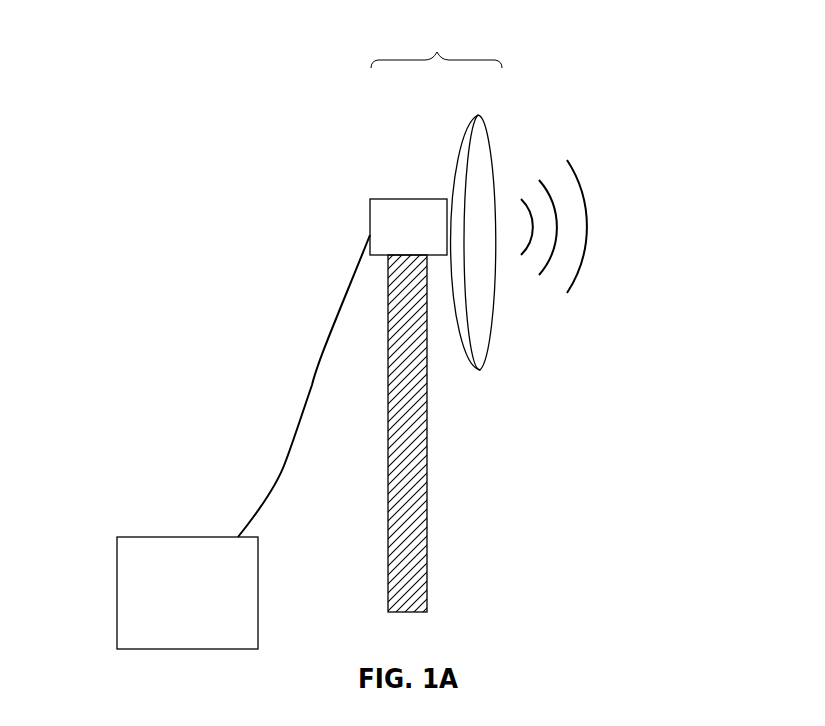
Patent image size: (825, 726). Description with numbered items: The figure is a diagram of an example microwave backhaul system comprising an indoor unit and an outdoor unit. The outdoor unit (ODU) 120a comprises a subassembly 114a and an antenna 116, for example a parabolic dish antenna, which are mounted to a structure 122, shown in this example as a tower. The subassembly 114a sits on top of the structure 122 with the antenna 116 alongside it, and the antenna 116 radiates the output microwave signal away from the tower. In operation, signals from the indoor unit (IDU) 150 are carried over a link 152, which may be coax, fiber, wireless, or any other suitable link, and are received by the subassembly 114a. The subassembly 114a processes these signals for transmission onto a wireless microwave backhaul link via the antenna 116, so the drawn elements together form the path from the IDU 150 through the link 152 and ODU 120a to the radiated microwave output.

The outdoor unit (ODU) 120a is at (437, 52).
The antenna 116 is at (478, 115).
The subassembly 114a is at (417, 199).
The structure 122 is at (427, 461).
The link 152 is at (315, 378).
The indoor unit (IDU) 150 is at (173, 612).